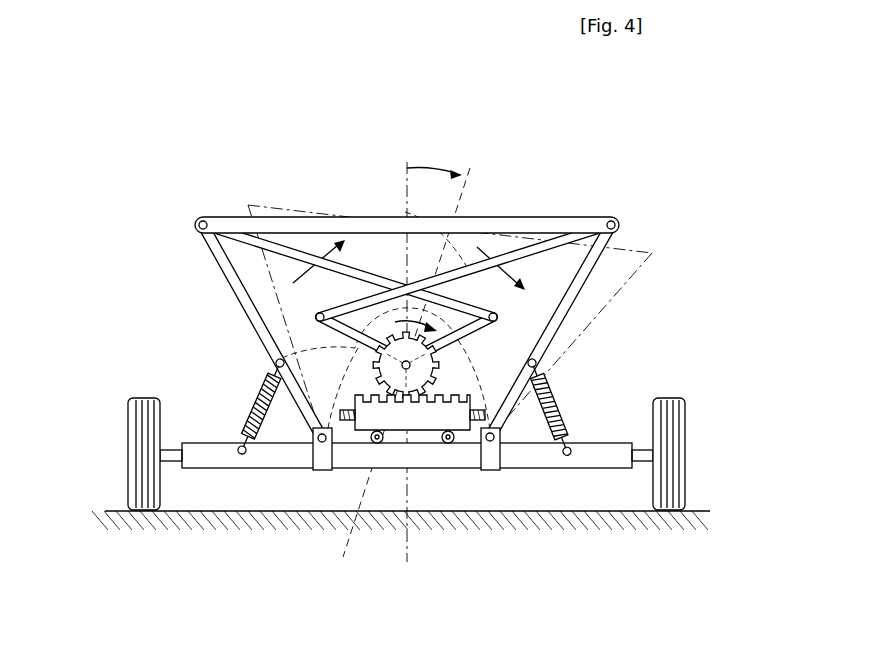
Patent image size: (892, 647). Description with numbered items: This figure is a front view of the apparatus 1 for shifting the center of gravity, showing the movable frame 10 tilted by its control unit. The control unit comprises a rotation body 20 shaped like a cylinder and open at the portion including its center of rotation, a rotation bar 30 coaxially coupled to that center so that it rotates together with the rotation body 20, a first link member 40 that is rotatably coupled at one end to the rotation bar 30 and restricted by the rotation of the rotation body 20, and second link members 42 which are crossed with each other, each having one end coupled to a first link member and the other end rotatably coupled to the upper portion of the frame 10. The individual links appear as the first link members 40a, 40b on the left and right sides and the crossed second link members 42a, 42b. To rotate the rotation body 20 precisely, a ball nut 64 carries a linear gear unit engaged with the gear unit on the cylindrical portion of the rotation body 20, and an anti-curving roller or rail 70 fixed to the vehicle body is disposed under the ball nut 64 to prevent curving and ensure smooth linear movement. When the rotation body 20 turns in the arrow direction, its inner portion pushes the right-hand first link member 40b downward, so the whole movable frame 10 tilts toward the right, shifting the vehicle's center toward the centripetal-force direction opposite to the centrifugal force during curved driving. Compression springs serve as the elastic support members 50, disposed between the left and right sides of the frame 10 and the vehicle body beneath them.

The apparatus for shifting the center of gravity 1 is at (495, 90).
The movable frame 10 is at (541, 207).
The rotation body 20 is at (463, 335).
The rotation bar 30 is at (417, 370).
The first link member 40 is at (128, 296).
The first link member 40a is at (325, 352).
The first link member 40b is at (345, 293).
The second link member 42 is at (375, 137).
The second link member 42a is at (277, 252).
The second link member 42b is at (463, 263).
The elastic support member 50 is at (247, 405).
The ball nut 64 is at (398, 445).
The anti-curving roller or rail 70 is at (362, 442).